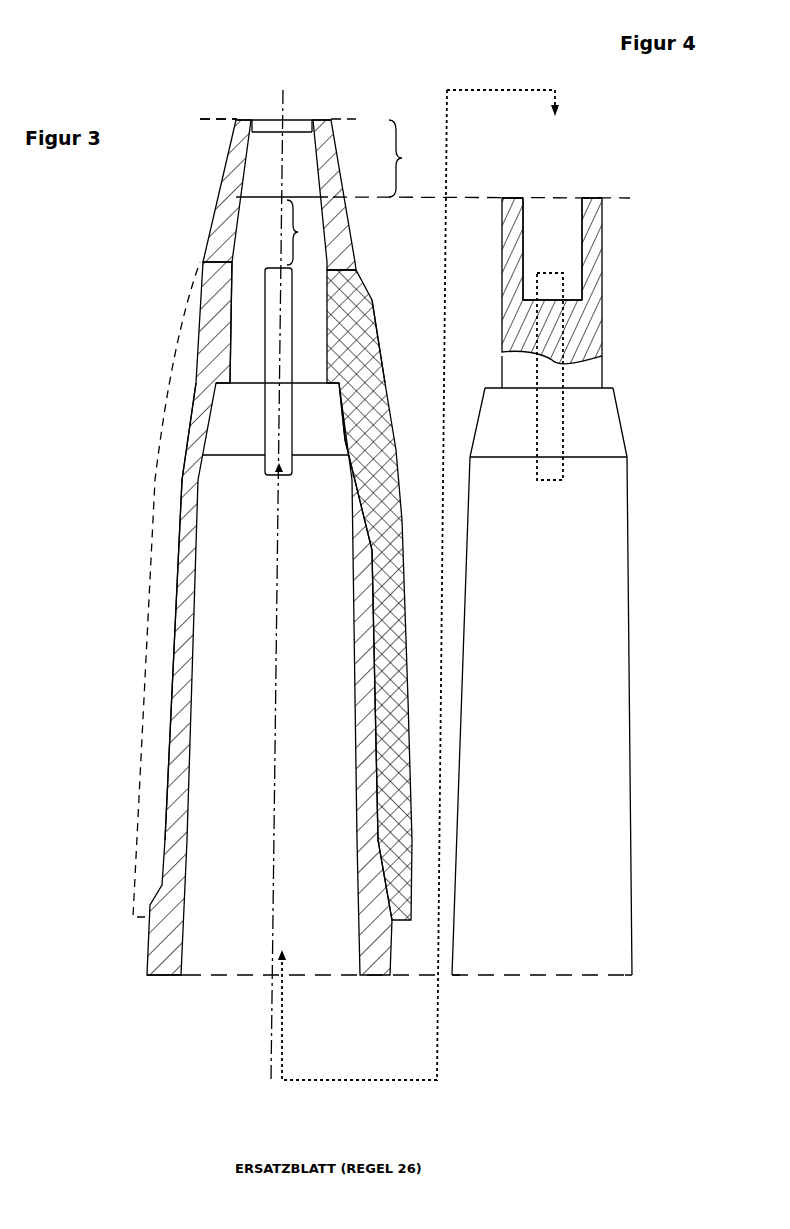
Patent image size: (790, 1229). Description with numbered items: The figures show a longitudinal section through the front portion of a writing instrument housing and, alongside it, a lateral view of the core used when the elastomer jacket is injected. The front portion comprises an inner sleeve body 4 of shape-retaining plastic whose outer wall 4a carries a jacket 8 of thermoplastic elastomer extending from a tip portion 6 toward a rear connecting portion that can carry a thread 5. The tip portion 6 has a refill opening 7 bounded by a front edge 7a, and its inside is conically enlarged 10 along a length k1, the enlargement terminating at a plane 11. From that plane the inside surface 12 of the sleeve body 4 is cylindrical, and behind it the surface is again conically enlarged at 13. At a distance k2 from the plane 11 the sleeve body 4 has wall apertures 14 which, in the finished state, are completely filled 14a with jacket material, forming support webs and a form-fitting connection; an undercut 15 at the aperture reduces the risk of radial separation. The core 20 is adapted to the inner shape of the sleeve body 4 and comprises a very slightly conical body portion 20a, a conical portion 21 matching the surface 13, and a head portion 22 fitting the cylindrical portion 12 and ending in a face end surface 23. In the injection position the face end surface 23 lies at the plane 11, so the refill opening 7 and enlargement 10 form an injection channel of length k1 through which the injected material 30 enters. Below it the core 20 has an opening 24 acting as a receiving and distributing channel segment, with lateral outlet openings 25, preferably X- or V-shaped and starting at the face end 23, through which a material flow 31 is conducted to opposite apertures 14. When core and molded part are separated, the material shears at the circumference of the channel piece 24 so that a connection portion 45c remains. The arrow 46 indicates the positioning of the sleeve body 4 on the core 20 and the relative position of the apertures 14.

In FIG. 3, the sleeve body 4 is at (180, 660).
In FIG. 3, the outer wall 4a is at (180, 557).
In FIG. 3, the thread 5 is at (158, 938).
In FIG. 3, the tip portion 6 is at (337, 119).
In FIG. 3, the refill opening 7 is at (238, 125).
In FIG. 3, the front edge 7a is at (192, 112).
In FIG. 3, the jacket 8 is at (163, 583).
In FIG. 3, the conical enlargement 10 is at (228, 173).
In FIG. 3, the plane 11 is at (235, 200).
In FIG. 3, the cylindrical inside surface 12 is at (200, 341).
In FIG. 3, the second conical enlargement 13 is at (203, 408).
In FIG. 3, the wall aperture 14 is at (270, 466).
In FIG. 4, the wall aperture 14 is at (550, 376).
In FIG. 3, the aperture filling 14a is at (375, 328).
In FIG. 3, the undercut 15 is at (333, 272).
In FIG. 4, the core 20 is at (682, 545).
In FIG. 4, the body portion 20a is at (582, 655).
In FIG. 4, the conical portion 21 is at (617, 435).
In FIG. 4, the head portion 22 is at (600, 335).
In FIG. 4, the face end surface 23 is at (596, 192).
In FIG. 4, the opening 24 is at (580, 228).
In FIG. 4, the lateral outlet openings 25 is at (498, 293).
In FIG. 3, the injected material 30 is at (283, 76).
In FIG. 4, the material flow 31 is at (562, 183).
In FIG. 3, the connection portion 45c is at (325, 290).
In FIG. 3, the arrow 46 is at (402, 1080).
In FIG. 3, the length k1 is at (406, 158).
In FIG. 3, the distance k2 is at (305, 232).